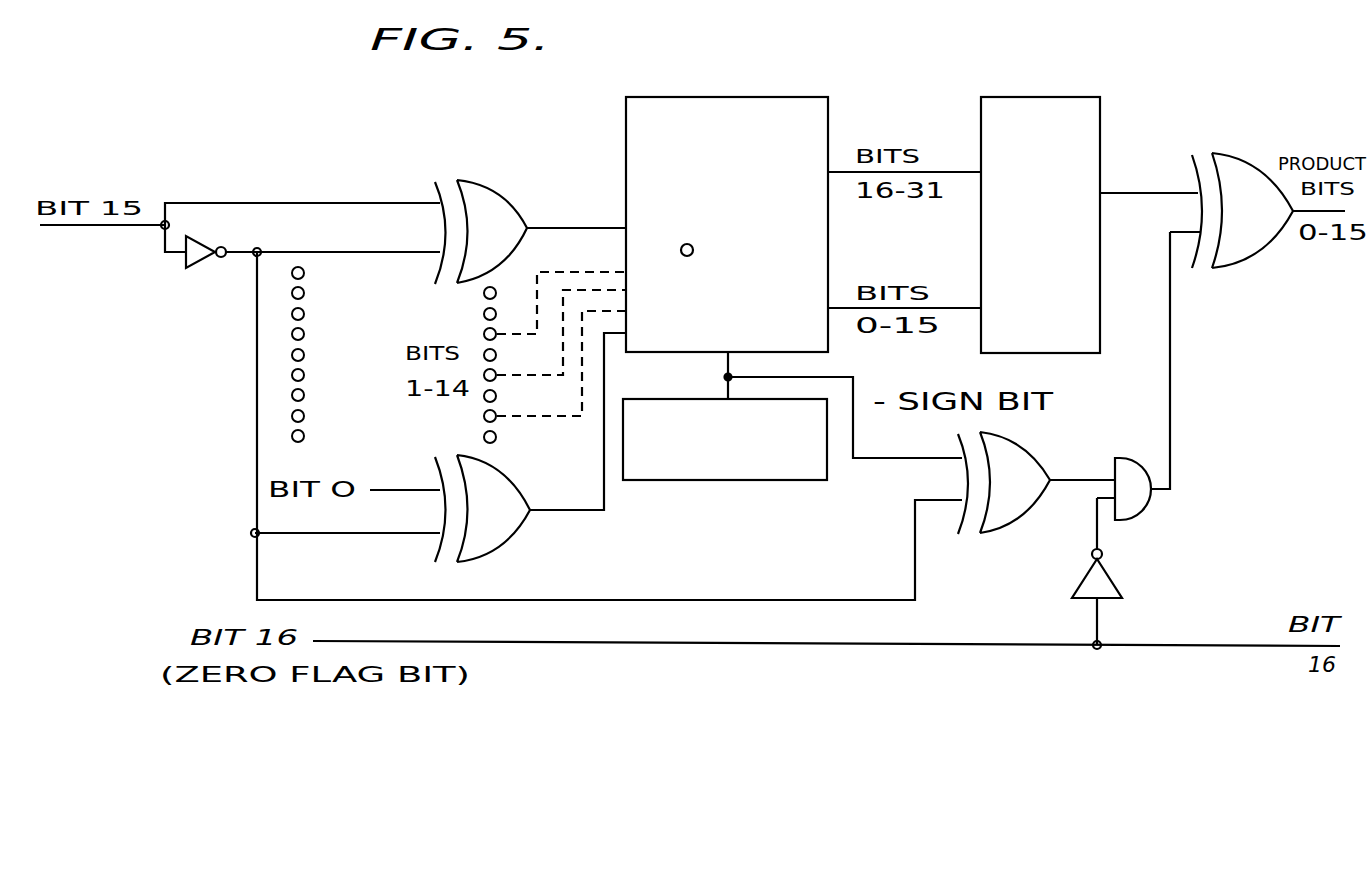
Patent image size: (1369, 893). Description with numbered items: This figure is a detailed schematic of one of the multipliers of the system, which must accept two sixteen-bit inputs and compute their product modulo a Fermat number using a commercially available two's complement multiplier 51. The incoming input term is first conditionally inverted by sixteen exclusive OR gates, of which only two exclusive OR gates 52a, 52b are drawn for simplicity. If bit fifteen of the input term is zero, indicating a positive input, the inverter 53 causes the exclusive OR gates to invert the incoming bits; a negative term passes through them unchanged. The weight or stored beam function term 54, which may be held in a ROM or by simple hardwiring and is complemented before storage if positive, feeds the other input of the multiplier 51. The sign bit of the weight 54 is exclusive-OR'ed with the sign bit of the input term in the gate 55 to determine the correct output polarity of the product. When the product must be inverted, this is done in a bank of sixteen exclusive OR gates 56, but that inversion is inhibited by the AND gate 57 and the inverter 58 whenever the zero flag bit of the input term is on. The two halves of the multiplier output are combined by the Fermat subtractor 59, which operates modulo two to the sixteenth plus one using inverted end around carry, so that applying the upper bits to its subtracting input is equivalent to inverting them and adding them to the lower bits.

The multiplier 51 is at (700, 97).
The exclusive OR gate 52a is at (498, 190).
The exclusive OR gate 52b is at (488, 547).
The inverter 53 is at (197, 268).
The weight or stored beam function term 54 is at (705, 480).
The exclusive OR gate 55 is at (1008, 527).
The bank of sixteen exclusive OR gates 56 is at (1248, 257).
The AND gate 57 is at (1148, 510).
The inverter 58 is at (1115, 580).
The Fermat subtractor 59 is at (1030, 97).